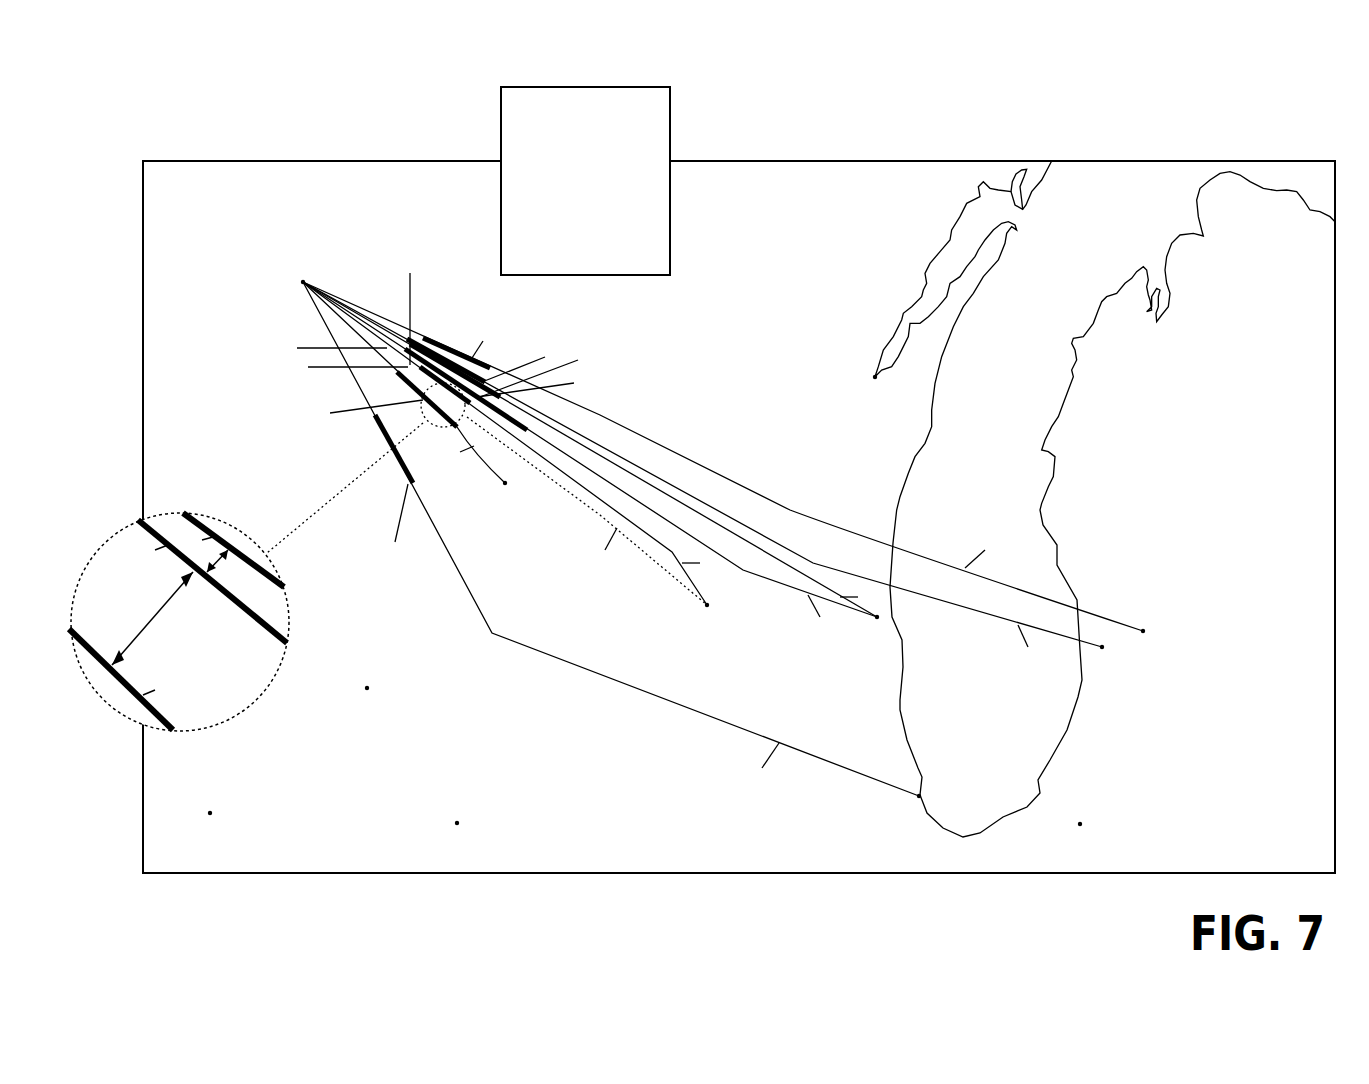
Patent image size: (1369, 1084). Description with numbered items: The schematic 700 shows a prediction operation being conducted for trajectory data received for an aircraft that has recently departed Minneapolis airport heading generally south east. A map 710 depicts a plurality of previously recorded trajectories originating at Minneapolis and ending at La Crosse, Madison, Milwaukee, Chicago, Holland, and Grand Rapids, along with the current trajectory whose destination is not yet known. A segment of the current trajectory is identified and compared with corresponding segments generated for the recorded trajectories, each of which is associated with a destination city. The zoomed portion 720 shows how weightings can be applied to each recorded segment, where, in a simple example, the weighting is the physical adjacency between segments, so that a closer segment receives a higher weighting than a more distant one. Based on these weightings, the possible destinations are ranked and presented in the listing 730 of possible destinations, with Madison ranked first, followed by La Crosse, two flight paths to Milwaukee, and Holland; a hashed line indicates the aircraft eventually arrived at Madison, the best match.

The schematic 700 is at (224, 101).
The map 710 is at (1240, 161).
The zoomed portion 720 is at (292, 607).
The listing of possible destinations 730 is at (628, 84).